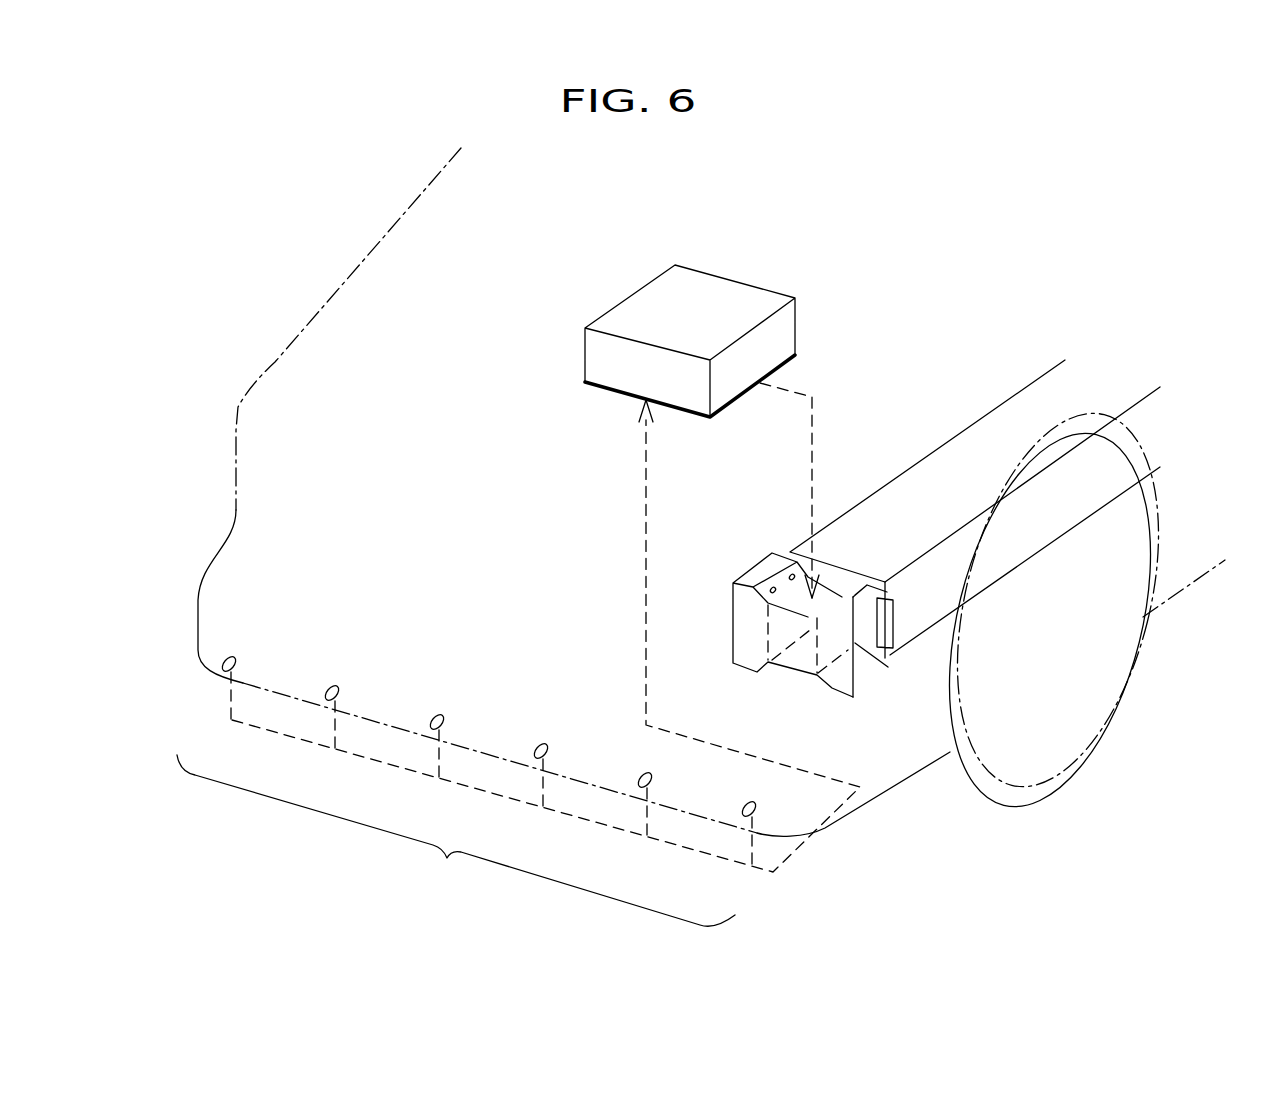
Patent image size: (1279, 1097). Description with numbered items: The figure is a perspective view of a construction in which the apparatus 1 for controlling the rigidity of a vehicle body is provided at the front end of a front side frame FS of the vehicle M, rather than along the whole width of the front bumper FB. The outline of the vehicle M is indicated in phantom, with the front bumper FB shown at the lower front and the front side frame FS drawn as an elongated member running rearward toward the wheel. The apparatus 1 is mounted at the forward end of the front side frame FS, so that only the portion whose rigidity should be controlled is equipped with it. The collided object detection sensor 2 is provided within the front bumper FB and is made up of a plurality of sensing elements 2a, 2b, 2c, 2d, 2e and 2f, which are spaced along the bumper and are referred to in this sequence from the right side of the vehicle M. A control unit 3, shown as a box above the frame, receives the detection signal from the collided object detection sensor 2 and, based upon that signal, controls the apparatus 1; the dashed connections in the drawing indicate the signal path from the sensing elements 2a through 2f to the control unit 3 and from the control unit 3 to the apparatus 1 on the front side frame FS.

The vehicle M is at (350, 258).
The front bumper FB is at (198, 630).
The front side frame FS is at (943, 478).
The control unit 3 is at (722, 298).
The apparatus for controlling the rigidity of a vehicle body 1 is at (872, 683).
The collided object detection sensor 2 is at (456, 851).
The sensing element 2a is at (228, 672).
The sensing element 2b is at (331, 701).
The sensing element 2c is at (436, 730).
The sensing element 2d is at (540, 759).
The sensing element 2e is at (643, 788).
The sensing element 2f is at (748, 817).